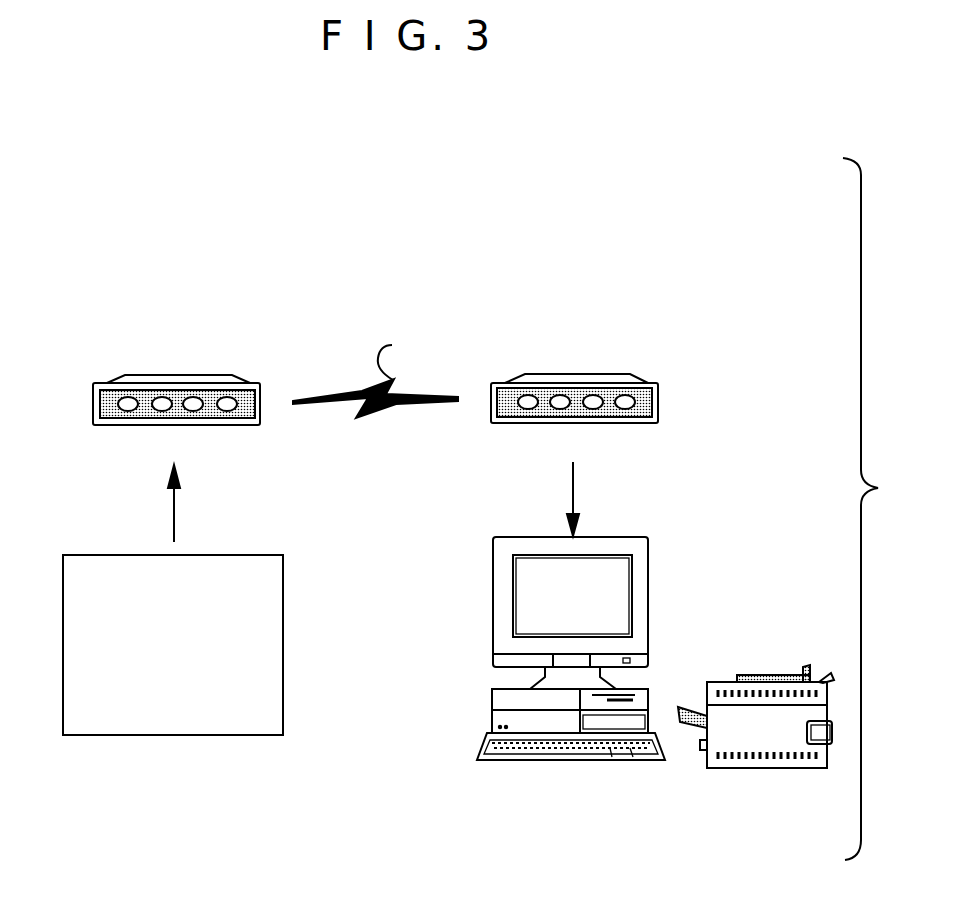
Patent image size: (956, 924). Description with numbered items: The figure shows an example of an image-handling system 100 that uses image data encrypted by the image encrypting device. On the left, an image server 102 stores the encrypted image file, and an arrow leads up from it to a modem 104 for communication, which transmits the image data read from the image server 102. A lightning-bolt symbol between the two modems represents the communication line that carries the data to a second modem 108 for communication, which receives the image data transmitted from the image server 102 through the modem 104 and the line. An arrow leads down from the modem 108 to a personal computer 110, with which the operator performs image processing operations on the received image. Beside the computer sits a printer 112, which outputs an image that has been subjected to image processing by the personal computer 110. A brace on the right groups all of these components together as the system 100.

The image-handling system 100 is at (370, 232).
The image server 102 is at (283, 617).
The modem for communication 104 is at (175, 377).
The modem for communication 108 is at (658, 397).
The personal computer 110 is at (649, 690).
The printer 112 is at (743, 768).